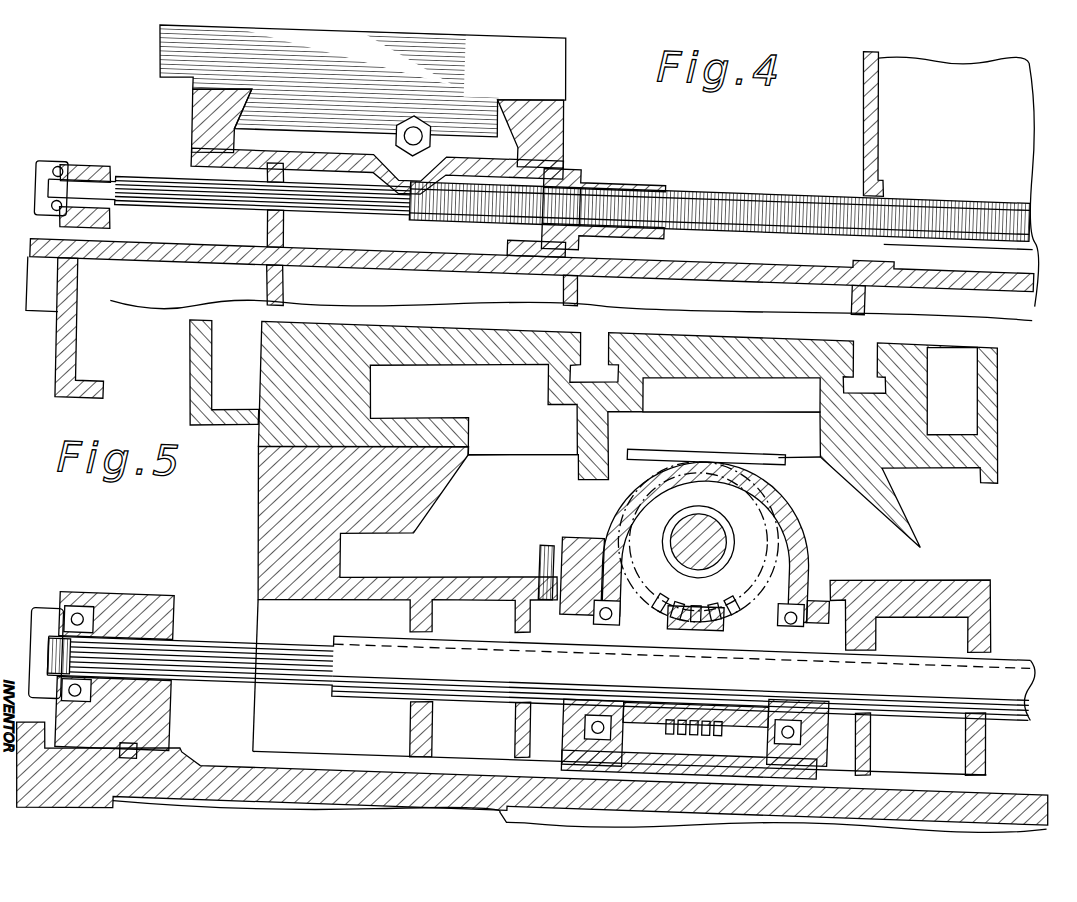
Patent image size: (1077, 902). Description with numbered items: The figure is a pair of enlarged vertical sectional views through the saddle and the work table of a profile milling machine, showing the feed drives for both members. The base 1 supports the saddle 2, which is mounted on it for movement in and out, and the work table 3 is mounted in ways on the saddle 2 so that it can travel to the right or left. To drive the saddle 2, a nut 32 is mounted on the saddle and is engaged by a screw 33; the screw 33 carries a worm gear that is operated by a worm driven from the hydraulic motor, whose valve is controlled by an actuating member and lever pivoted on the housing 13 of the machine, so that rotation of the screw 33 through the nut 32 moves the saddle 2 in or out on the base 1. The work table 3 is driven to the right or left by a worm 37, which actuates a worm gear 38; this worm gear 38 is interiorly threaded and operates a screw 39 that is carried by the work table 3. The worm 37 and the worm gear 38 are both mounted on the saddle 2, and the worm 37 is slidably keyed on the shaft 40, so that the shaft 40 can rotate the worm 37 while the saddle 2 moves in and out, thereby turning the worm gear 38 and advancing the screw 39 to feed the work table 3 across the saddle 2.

In FIG. 4, the base 1 is at (68, 333).
In FIG. 5, the base 1 is at (221, 763).
In FIG. 4, the saddle 2 is at (551, 116).
In FIG. 5, the saddle 2 is at (262, 511).
In FIG. 4, the work table 3 is at (545, 49).
In FIG. 5, the work table 3 is at (255, 419).
In FIG. 4, the housing 13 is at (860, 81).
In FIG. 4, the nut 32 is at (623, 165).
In FIG. 4, the screw 33 is at (739, 163).
In FIG. 5, the worm 37 is at (721, 585).
In FIG. 5, the worm gear 38 is at (658, 580).
In FIG. 5, the screw 39 is at (695, 499).
In FIG. 5, the shaft 40 is at (992, 639).